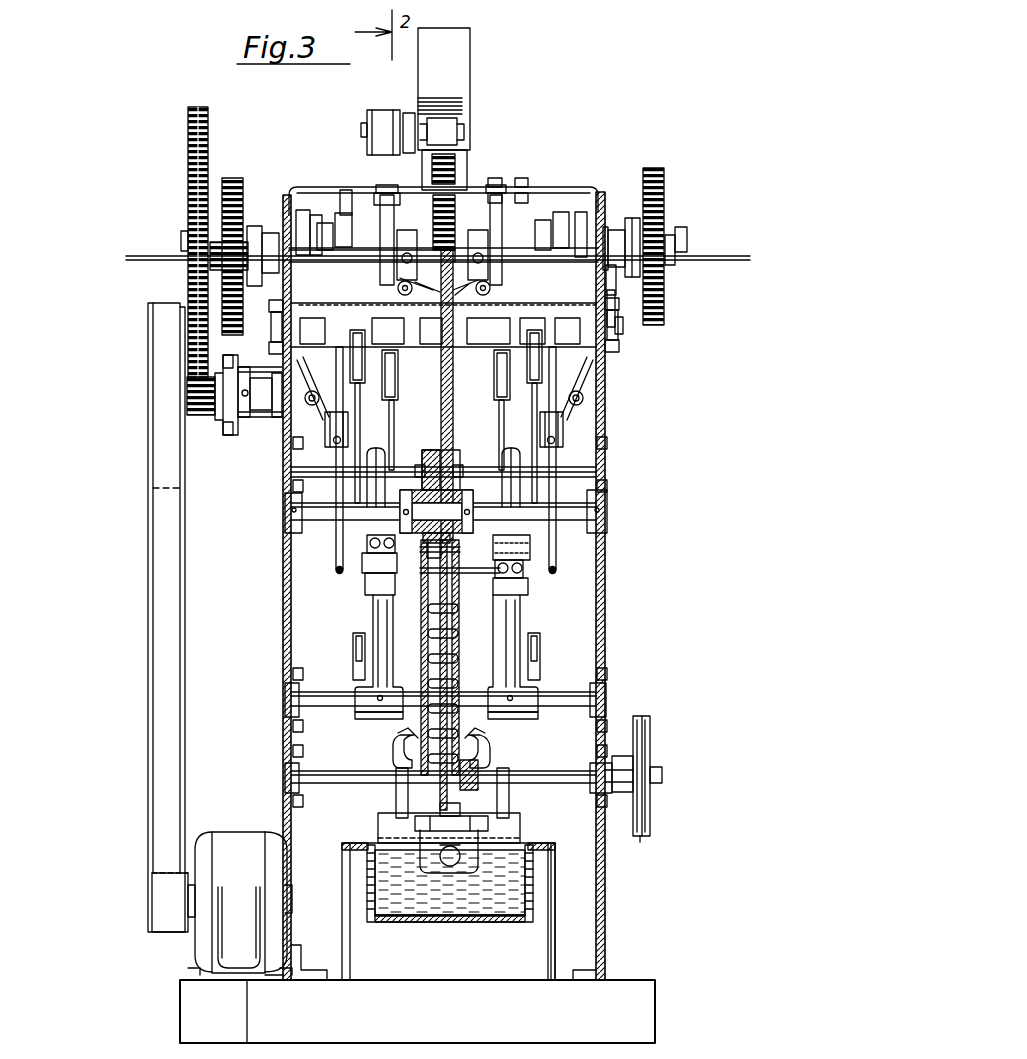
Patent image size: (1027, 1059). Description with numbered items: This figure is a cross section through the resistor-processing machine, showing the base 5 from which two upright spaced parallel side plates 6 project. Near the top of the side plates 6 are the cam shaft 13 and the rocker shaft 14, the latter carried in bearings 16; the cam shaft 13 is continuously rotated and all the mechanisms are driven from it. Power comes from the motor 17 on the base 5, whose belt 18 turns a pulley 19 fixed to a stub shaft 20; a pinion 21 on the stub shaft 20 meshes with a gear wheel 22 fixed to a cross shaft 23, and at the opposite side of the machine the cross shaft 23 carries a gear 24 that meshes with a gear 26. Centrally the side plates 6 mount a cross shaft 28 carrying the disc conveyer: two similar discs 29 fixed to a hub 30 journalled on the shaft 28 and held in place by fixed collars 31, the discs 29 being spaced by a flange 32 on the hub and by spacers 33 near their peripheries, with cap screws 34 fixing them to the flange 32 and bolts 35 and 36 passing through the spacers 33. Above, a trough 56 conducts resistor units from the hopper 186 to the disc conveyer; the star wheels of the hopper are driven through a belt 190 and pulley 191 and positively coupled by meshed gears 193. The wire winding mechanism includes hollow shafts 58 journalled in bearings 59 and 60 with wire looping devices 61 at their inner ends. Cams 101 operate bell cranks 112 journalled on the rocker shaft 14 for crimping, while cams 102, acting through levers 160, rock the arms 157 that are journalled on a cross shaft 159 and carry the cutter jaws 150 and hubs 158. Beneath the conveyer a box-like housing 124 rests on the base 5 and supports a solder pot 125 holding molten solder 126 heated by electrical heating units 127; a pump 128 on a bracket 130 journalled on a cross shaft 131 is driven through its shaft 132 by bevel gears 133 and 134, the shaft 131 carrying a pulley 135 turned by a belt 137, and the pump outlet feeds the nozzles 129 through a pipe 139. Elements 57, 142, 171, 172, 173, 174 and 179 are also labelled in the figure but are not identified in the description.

The base 5 is at (628, 998).
The side plates 6 is at (285, 630).
The cam shaft 13 is at (300, 235).
The rocker shaft 14 is at (626, 332).
The bearings 16 is at (276, 330).
The motor 17 is at (232, 855).
The belt 18 is at (148, 745).
The pulley 19 is at (150, 407).
The stub shaft 20 is at (258, 400).
The pinion 21 is at (205, 415).
The gear wheel 22 is at (188, 147).
The cross shaft 23 is at (182, 240).
The gear 24 is at (590, 205).
The gear 26 is at (602, 280).
The cross shaft 28 is at (620, 512).
The discs 29 is at (452, 355).
The hub 30 is at (462, 482).
The fixed collars 31 is at (405, 470).
The flange 32 is at (447, 448).
The spacers 33 is at (440, 331).
The cap screws 34 is at (452, 470).
The bolts 35 is at (443, 325).
The bolts 36 is at (428, 604).
The trough 56 is at (470, 188).
The bolts 57 is at (482, 190).
The hollow shaft 58 is at (308, 245).
The bearings 59 is at (275, 225).
The bearings 60 is at (380, 192).
The wire guiding or looping devices 61 is at (397, 234).
The cams 101 is at (590, 177).
The cams 102 is at (347, 225).
The bell cranks 112 is at (316, 382).
The box-like supporting housing 124 is at (551, 940).
The solder pot 125 is at (433, 926).
The solder 126 is at (395, 925).
The electrical heating units 127 is at (395, 832).
The pump 128 is at (470, 928).
The nozzles 129 is at (405, 740).
The bracket 130 is at (396, 798).
The cross shaft 131 is at (561, 775).
The shaft 132 is at (490, 820).
The bevel gear 133 is at (490, 802).
The bevel gear 134 is at (498, 763).
The pulley 135 is at (655, 740).
The belt 137 is at (642, 838).
The pipe 139 is at (448, 851).
The plate 142 is at (400, 725).
The jaws 150 is at (385, 566).
The arms 157 is at (365, 630).
The hubs 158 is at (511, 549).
The cross shaft 159 is at (565, 690).
The levers 160 is at (362, 692).
The main shaft 171 is at (142, 255).
The rack 172 is at (432, 215).
The gear 173 is at (230, 178).
The hub 174 is at (198, 263).
The gear 179 is at (255, 226).
The hopper 186 is at (452, 70).
The belt 190 is at (378, 118).
The pulley 191 is at (361, 121).
The meshed gears 193 is at (410, 124).